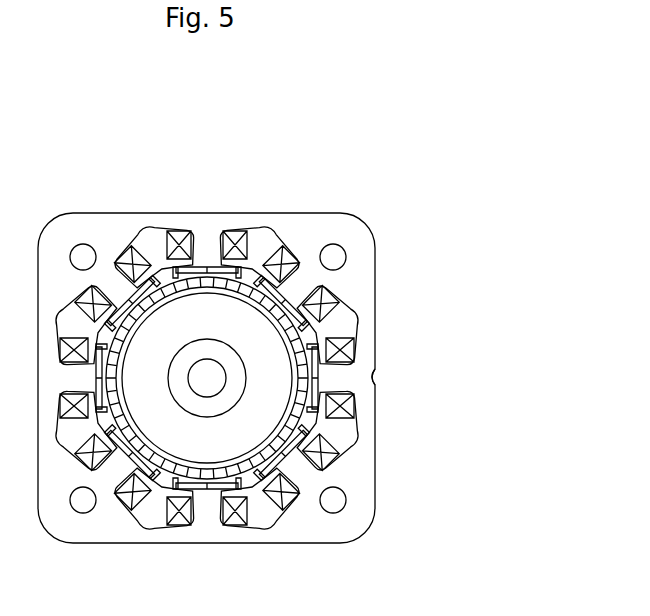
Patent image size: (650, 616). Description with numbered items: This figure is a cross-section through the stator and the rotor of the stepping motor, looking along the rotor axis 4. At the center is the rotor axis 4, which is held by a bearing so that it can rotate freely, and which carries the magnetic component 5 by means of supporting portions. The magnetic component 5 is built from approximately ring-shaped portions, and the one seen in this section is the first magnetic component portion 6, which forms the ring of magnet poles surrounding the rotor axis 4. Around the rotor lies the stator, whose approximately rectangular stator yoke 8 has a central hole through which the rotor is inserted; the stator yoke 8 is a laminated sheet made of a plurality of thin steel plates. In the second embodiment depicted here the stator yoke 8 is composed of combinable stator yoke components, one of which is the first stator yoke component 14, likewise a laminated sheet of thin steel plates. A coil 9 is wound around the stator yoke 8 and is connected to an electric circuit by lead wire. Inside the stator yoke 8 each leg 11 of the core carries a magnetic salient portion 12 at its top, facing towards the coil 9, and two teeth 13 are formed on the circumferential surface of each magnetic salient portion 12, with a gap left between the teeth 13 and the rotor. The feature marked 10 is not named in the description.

The rotor axis 4 is at (214, 386).
The magnetic component 5 is at (314, 439).
The first magnetic component portion 6 is at (297, 430).
The stator yoke 8 is at (273, 324).
The coil 9 is at (322, 302).
The notch 10 is at (378, 370).
The leg 11 is at (223, 232).
The magnetic salient portion 12 is at (245, 273).
The teeth 13 is at (213, 264).
The first stator yoke component 14 is at (327, 234).